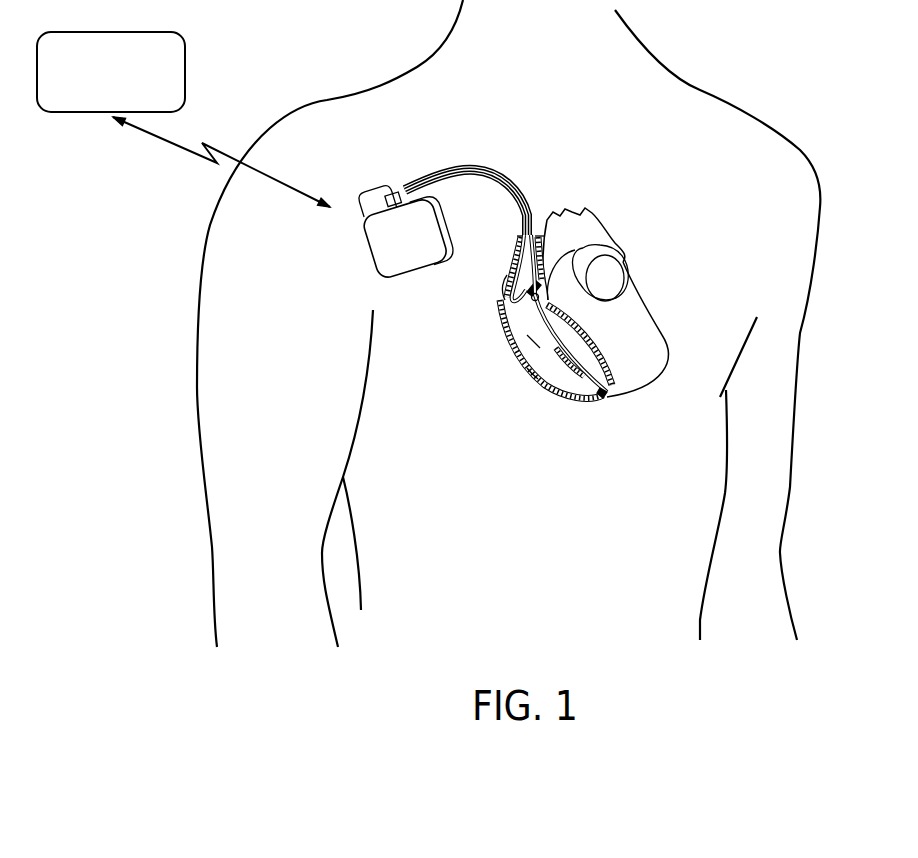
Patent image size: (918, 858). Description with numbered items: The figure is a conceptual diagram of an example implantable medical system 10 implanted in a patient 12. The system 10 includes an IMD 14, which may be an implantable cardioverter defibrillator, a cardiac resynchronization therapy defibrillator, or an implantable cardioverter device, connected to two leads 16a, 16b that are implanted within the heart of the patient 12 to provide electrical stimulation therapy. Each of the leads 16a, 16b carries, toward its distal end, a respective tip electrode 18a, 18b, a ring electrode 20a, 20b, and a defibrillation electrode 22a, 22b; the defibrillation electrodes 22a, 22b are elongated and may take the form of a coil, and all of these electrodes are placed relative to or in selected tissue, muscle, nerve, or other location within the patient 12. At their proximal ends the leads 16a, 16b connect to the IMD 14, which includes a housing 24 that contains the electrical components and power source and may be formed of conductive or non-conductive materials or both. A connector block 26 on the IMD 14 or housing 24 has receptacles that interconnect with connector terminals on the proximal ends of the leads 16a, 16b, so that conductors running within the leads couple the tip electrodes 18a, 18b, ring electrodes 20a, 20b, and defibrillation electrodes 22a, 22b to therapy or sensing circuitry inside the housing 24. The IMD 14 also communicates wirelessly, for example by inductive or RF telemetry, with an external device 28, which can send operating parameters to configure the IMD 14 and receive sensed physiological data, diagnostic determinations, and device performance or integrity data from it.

The implantable medical system 10 is at (565, 152).
The patient 12 is at (703, 90).
The IMD 14 is at (358, 242).
The lead 16a is at (497, 190).
The lead 16b is at (492, 167).
The tip electrode 18a is at (545, 275).
The tip electrode 18b is at (603, 395).
The ring electrode 20a is at (532, 343).
The ring electrode 20b is at (607, 358).
The defibrillation electrode 22a is at (520, 258).
The defibrillation electrode 22b is at (532, 373).
The housing 24 is at (417, 263).
The connector block 26 is at (372, 197).
The external device 28 is at (121, 101).